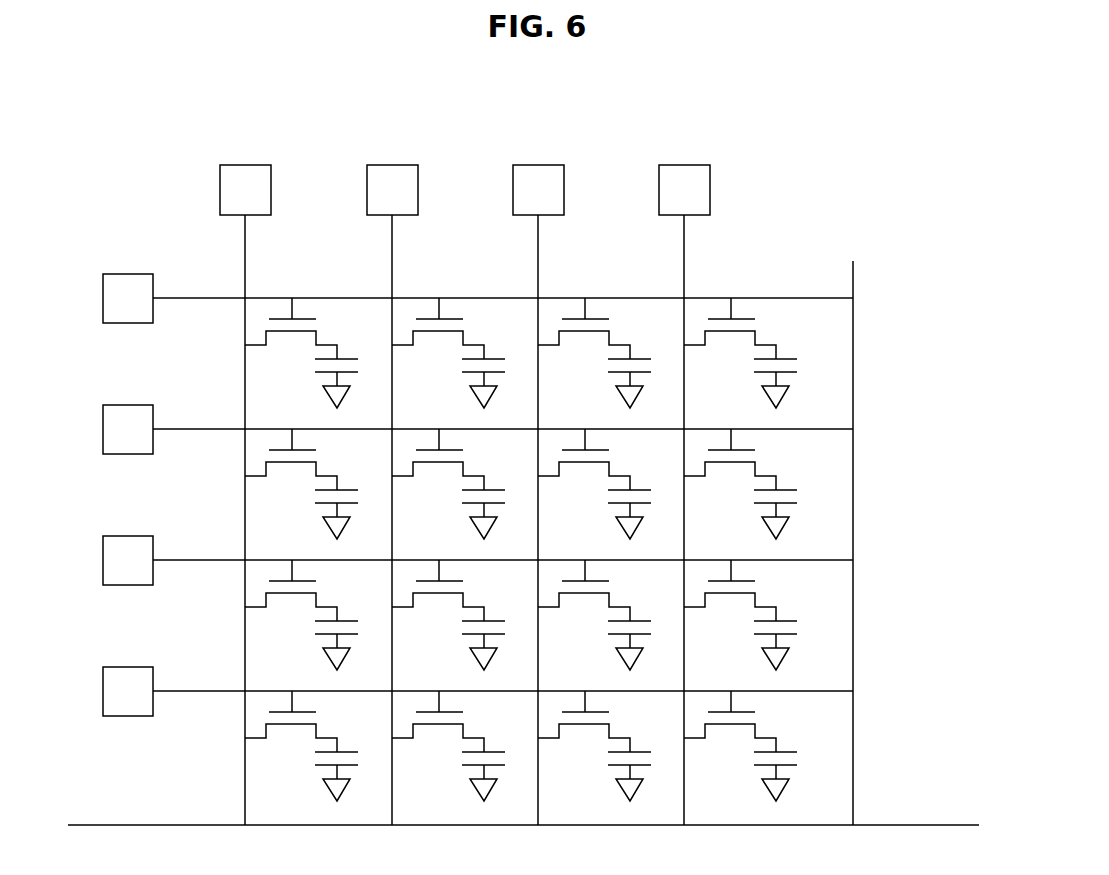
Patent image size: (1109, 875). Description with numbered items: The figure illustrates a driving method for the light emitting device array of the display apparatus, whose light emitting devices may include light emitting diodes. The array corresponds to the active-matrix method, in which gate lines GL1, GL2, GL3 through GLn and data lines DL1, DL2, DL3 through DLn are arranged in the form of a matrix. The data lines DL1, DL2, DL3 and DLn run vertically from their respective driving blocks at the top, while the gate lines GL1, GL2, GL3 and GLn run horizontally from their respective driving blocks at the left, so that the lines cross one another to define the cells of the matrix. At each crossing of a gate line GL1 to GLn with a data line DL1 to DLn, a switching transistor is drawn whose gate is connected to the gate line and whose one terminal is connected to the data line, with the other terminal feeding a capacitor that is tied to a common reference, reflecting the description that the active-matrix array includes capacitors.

The data line DL1 is at (271, 495).
The data line DL2 is at (418, 495).
The data line DL3 is at (564, 495).
The data line DLn is at (710, 495).
The gate line GL1 is at (478, 316).
The gate line GL2 is at (478, 447).
The gate line GL3 is at (478, 578).
The gate line GLn is at (478, 709).